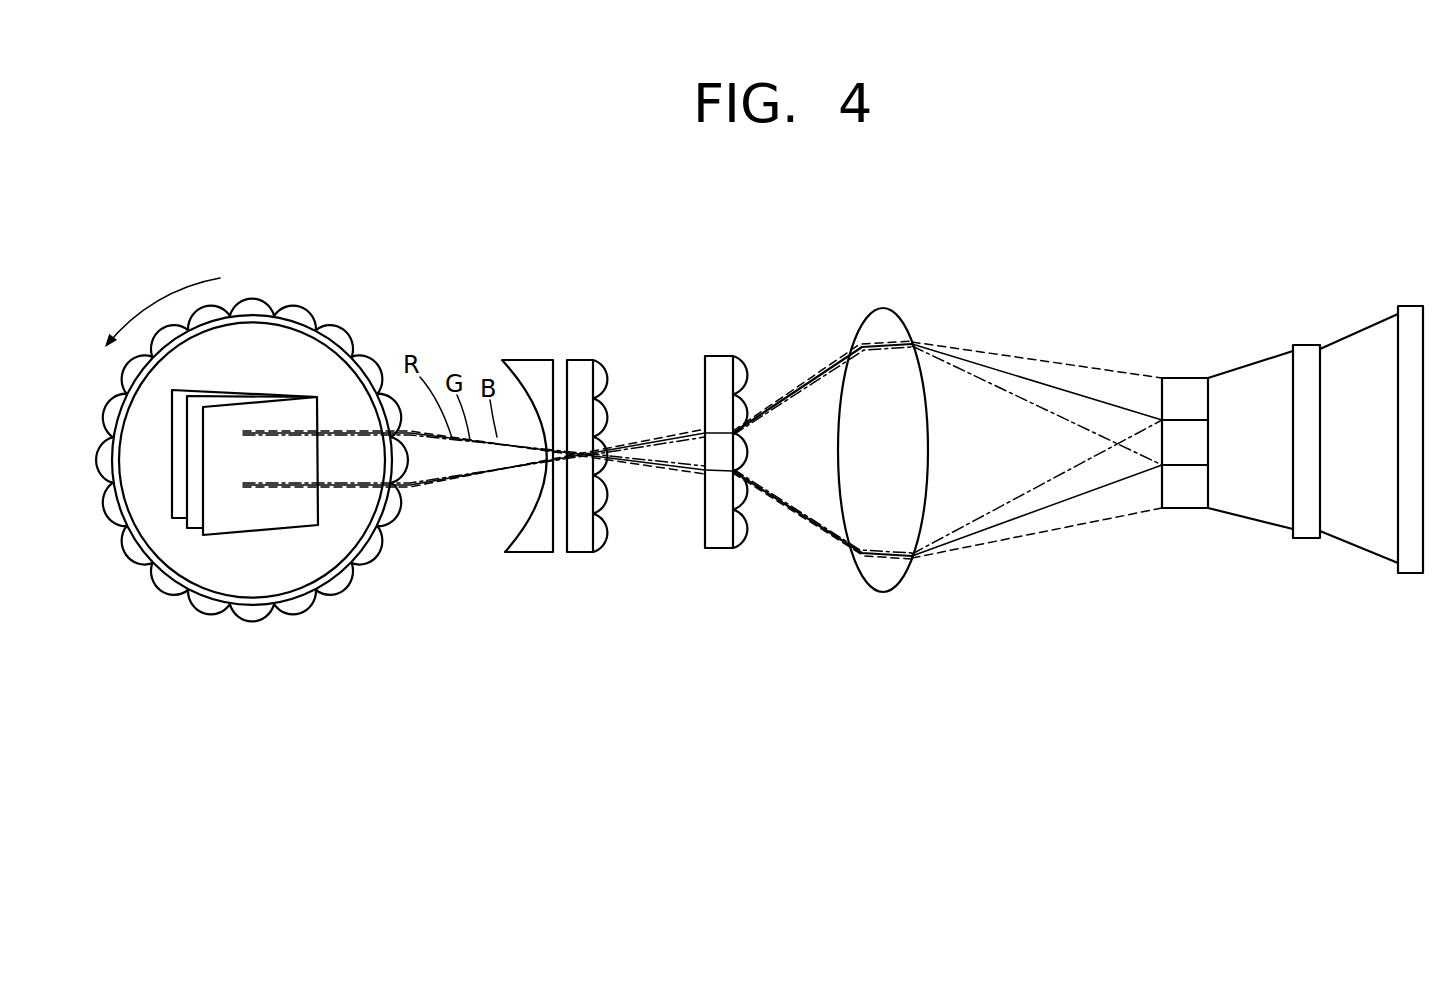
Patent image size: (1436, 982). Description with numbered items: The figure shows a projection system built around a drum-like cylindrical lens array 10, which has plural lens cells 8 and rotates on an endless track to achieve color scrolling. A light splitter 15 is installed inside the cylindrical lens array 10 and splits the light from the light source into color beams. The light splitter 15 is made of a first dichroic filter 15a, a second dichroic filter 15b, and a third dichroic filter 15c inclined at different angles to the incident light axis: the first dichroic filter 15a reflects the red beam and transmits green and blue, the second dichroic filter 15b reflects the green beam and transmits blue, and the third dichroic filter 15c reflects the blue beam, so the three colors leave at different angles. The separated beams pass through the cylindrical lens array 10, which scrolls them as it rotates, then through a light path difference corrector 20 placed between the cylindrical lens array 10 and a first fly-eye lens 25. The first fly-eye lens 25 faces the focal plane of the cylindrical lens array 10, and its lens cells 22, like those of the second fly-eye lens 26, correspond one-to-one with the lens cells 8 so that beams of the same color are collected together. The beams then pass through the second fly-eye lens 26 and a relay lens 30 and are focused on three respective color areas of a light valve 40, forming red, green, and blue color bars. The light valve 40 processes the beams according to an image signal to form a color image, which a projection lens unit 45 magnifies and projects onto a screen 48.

The cylindrical lens array 10 is at (320, 278).
The lens cells 8 is at (379, 356).
The light splitter 15 is at (219, 562).
The first dichroic filter 15a is at (235, 524).
The second dichroic filter 15b is at (195, 529).
The third dichroic filter 15c is at (177, 520).
The light path difference corrector 20 is at (533, 365).
The lens cells 22 is at (603, 543).
The first fly-eye lens 25 is at (580, 370).
The second fly-eye lens 26 is at (717, 367).
The relay lens 30 is at (878, 310).
The light valve 40 is at (1187, 380).
The projection lens unit 45 is at (1307, 348).
The screen 48 is at (1410, 310).